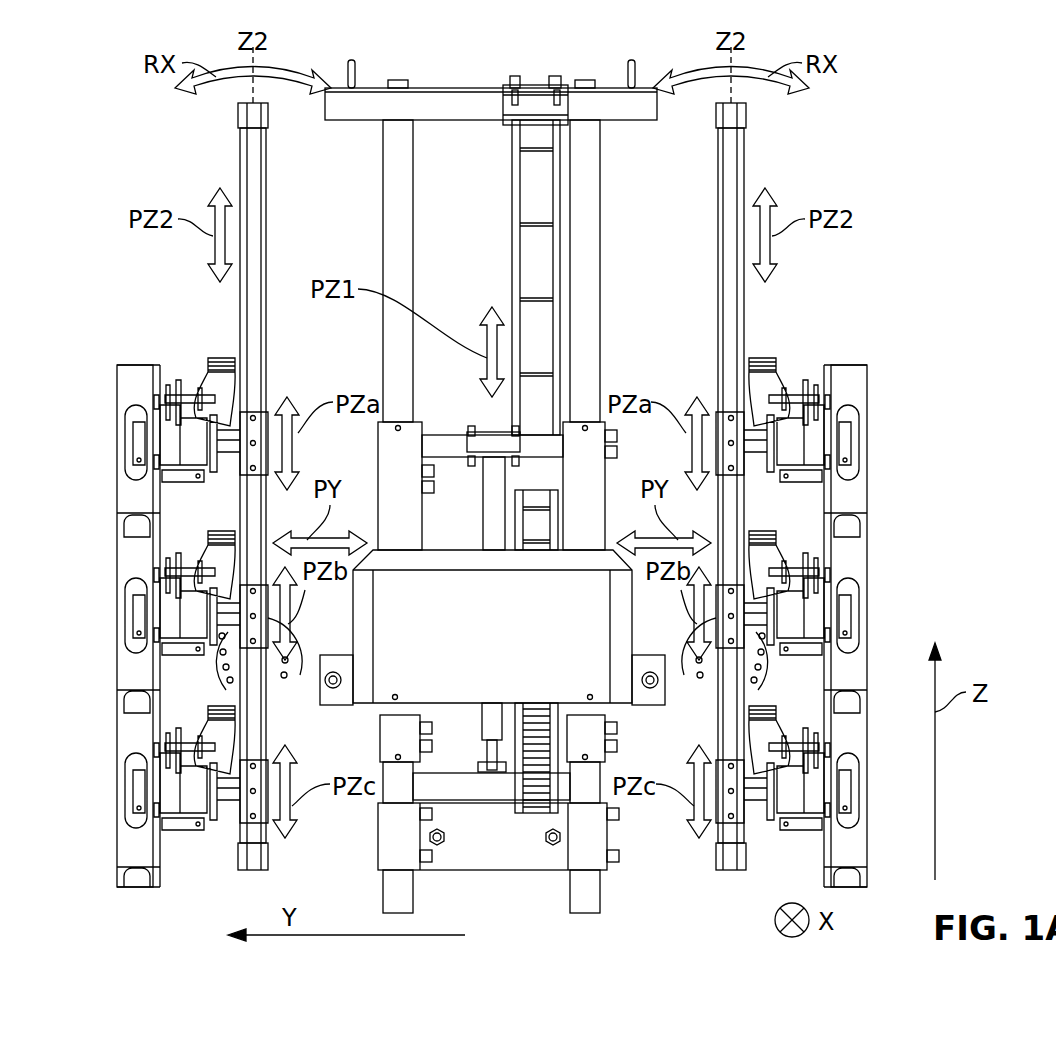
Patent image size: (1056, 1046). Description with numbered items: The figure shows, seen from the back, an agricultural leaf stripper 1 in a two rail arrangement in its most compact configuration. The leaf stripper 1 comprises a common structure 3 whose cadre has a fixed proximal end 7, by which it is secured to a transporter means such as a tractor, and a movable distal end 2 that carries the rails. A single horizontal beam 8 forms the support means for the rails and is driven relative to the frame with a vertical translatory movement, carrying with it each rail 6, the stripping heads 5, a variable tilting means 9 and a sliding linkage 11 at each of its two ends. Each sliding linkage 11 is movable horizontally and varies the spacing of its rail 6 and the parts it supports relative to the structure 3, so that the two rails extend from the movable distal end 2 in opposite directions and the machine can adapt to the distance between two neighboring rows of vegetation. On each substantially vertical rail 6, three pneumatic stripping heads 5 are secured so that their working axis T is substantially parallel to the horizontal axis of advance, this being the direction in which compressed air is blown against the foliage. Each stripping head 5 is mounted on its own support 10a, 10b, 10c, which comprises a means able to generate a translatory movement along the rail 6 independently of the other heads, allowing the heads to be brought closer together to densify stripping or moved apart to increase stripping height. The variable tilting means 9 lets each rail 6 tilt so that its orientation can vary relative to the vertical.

The agricultural leaf stripper 1 is at (864, 52).
The movable distal end 2 is at (590, 463).
The structure 3 is at (498, 825).
The stripping head 5 is at (130, 566).
The rail 6 is at (255, 333).
The fixed proximal end 7 is at (465, 852).
The beam 8 is at (650, 672).
The variable tilting means 9 is at (200, 665).
The support 10a is at (175, 418).
The support 10b is at (170, 605).
The support 10c is at (240, 790).
The sliding linkage 11 is at (340, 665).
The working axis T is at (124, 442).